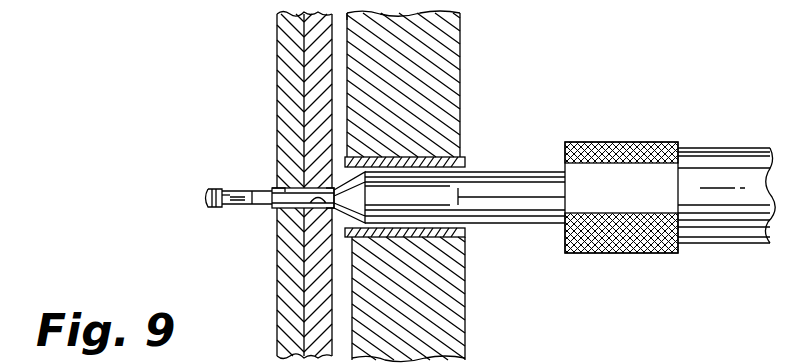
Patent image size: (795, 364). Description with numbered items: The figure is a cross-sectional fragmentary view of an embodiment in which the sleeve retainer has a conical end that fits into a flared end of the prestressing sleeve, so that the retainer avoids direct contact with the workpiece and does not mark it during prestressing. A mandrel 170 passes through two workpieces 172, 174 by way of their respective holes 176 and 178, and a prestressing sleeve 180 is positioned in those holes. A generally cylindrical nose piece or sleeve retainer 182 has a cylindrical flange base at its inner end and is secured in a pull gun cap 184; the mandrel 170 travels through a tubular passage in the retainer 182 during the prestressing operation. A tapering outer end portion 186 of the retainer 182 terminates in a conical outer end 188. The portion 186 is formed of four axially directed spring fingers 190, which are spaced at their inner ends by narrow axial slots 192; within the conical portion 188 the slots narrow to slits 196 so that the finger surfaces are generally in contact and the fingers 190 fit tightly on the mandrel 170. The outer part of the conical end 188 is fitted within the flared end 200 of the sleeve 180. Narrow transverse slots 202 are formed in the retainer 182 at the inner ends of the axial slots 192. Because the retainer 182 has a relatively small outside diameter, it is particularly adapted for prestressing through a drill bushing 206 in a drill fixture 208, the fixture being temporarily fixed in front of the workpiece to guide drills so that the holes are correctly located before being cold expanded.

The mandrel 170 is at (232, 222).
The workpiece 172 is at (290, 52).
The workpiece 174 is at (366, 3).
The hole 176 is at (270, 188).
The hole 178 is at (305, 212).
The prestressing sleeve 180 is at (243, 210).
The sleeve retainer 182 is at (538, 150).
The pull gun cap 184 is at (630, 142).
The tapering outer end portion 186 is at (397, 238).
The conical outer end 188 is at (350, 227).
The spring fingers 190 is at (413, 192).
The axial slots 192 is at (433, 178).
The slits 196 is at (388, 188).
The flared end 200 is at (332, 172).
The transverse slots 202 is at (458, 206).
The drill bushing 206 is at (353, 192).
The drill fixture 208 is at (441, 32).